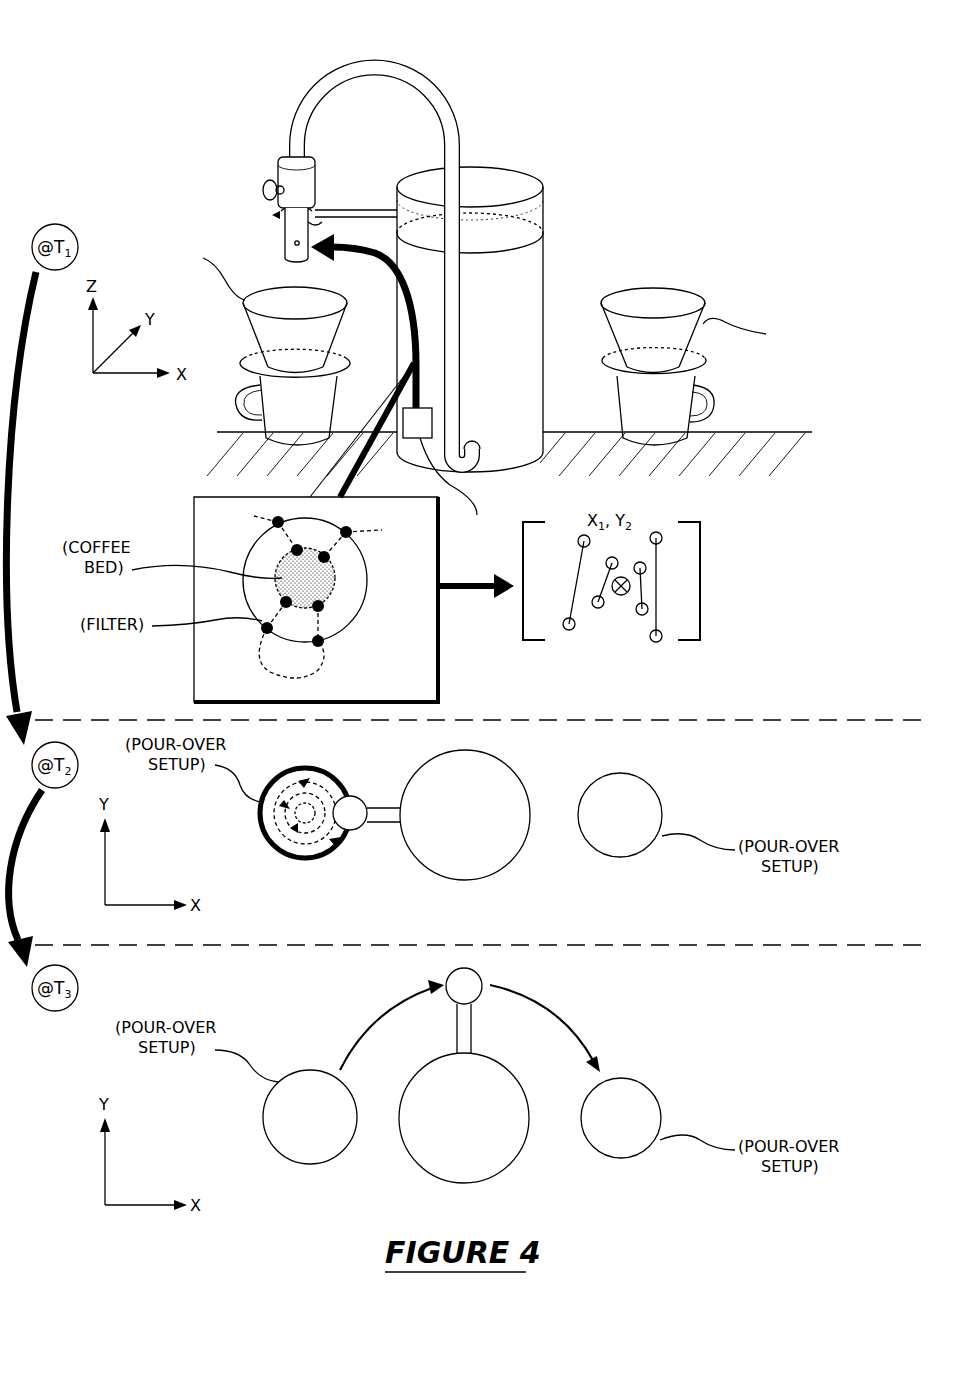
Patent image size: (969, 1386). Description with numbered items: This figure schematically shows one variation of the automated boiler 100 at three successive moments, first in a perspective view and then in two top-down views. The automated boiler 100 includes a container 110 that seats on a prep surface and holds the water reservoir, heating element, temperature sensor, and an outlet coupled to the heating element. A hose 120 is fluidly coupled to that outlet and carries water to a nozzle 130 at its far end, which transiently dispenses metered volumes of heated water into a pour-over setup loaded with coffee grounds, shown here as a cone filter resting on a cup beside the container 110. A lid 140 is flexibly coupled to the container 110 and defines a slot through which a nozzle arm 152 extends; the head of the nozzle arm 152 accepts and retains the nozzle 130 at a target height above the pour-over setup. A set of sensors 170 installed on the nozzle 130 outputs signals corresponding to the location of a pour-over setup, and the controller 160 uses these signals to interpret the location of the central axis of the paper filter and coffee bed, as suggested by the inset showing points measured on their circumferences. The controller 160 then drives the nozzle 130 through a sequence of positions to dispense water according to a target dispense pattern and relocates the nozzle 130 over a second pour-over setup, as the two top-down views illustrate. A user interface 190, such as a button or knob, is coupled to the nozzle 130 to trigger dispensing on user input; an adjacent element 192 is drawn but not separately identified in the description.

The automated boiler 100 is at (775, 160).
The container 110 is at (545, 283).
The hose 120 is at (445, 98).
The nozzle 130 is at (285, 156).
The lid 140 is at (545, 213).
The nozzle arm 152 is at (345, 208).
The controller 160 is at (477, 515).
The set of sensors 170 is at (292, 243).
The user interface 190 is at (227, 154).
The knob 192 is at (264, 186).